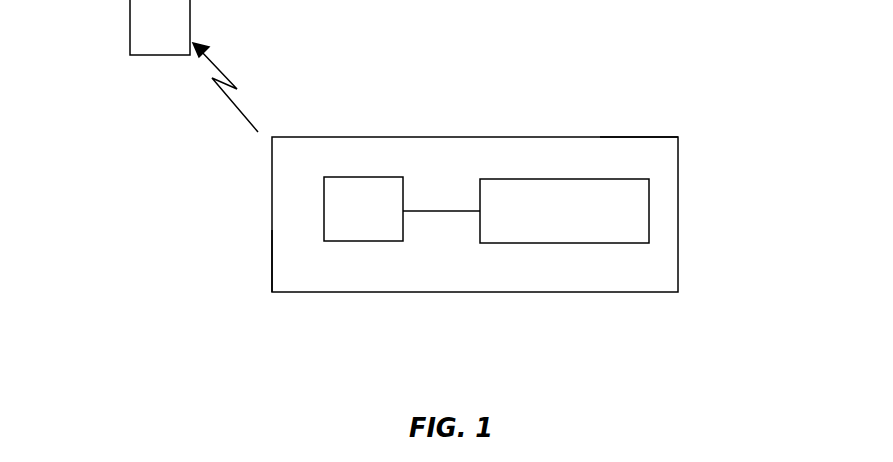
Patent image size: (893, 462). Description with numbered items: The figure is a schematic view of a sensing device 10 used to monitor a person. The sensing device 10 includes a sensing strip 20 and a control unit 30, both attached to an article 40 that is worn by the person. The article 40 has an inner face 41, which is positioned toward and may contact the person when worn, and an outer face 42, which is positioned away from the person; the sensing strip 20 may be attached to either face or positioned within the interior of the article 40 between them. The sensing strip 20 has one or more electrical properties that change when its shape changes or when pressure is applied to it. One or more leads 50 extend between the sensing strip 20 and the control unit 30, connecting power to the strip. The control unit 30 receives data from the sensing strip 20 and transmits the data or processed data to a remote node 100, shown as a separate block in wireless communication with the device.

The sensing device 10 is at (657, 73).
The sensing strip 20 is at (558, 178).
The control unit 30 is at (355, 198).
The article 40 is at (653, 263).
The inner face 41 is at (656, 148).
The outer face 42 is at (270, 272).
The leads 50 is at (432, 211).
The remote node 100 is at (194, 66).